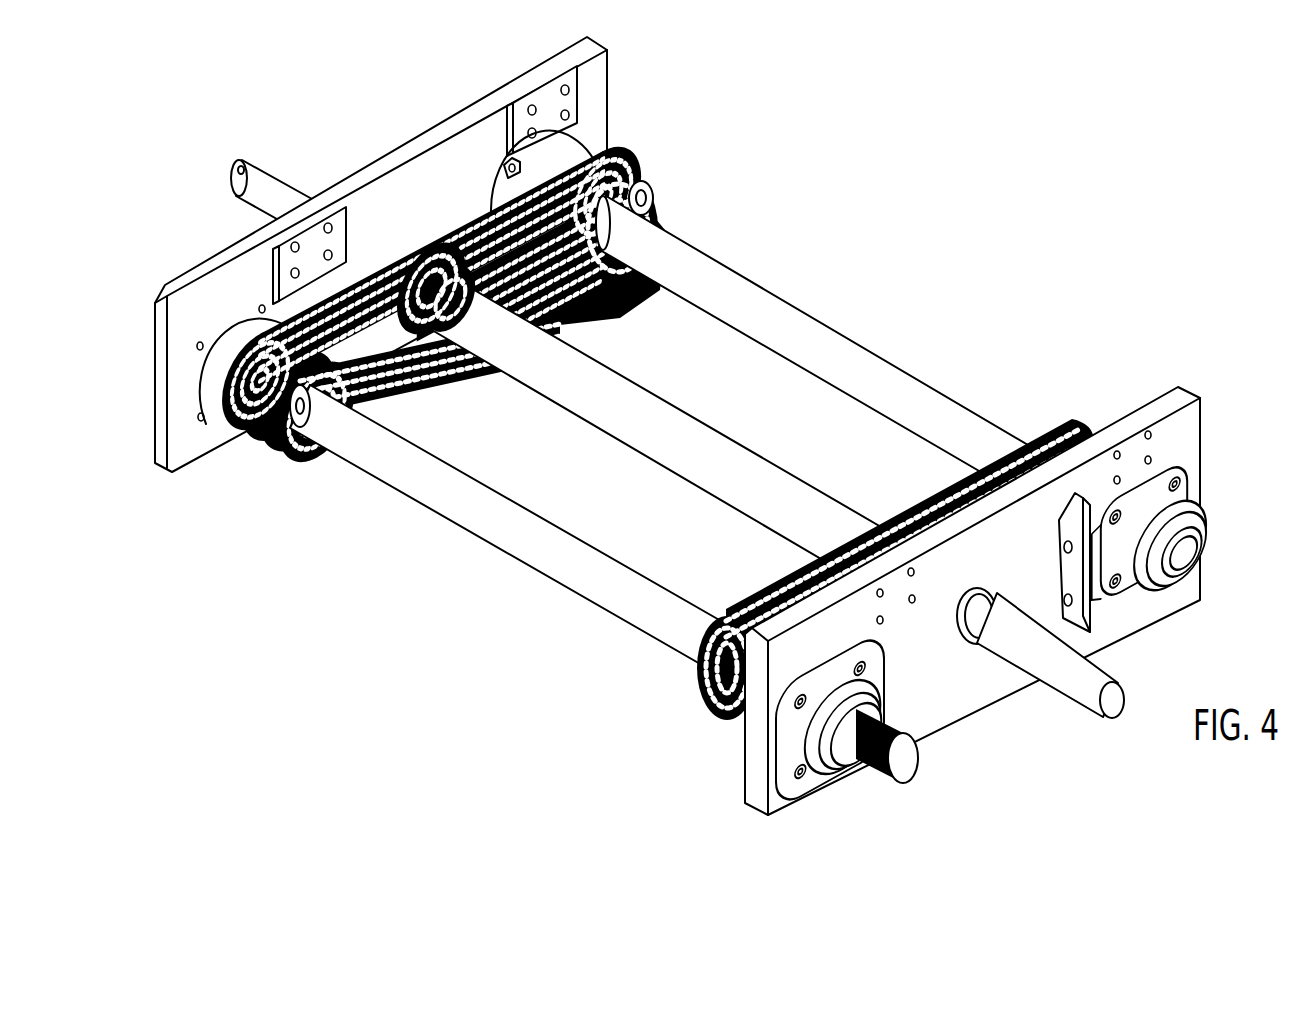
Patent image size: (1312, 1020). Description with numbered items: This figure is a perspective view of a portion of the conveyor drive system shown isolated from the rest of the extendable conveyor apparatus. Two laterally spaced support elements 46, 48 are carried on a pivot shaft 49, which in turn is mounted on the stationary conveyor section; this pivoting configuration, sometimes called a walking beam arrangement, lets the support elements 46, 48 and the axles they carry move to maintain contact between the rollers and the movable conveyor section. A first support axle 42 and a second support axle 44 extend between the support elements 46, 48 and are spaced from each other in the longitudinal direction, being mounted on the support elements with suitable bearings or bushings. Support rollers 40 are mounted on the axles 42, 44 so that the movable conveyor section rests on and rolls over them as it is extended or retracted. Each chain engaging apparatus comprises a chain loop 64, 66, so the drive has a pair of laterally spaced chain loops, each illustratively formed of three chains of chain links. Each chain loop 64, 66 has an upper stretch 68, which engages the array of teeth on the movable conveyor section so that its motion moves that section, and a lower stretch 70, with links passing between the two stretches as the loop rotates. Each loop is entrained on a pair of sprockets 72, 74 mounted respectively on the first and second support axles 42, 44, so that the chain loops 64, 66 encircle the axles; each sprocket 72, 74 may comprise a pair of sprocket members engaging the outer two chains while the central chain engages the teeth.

The support roller 40 is at (550, 157).
The first support axle 42 is at (507, 534).
The second support axle 44 is at (823, 326).
The support element 46 is at (427, 170).
The support element 48 is at (1180, 430).
The pivot shaft 49 is at (655, 418).
The chain loop 64 is at (668, 137).
The chain loop 66 is at (1083, 380).
The upper stretch 68 is at (658, 383).
The lower stretch 70 is at (432, 400).
The sprocket 72 is at (307, 450).
The sprocket 74 is at (652, 190).